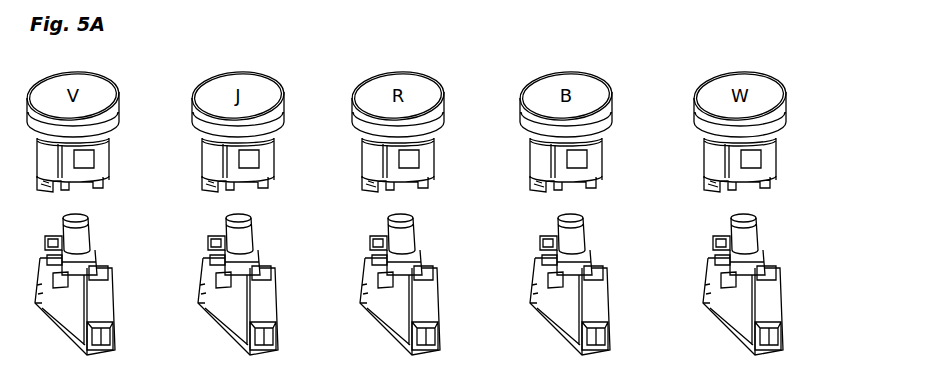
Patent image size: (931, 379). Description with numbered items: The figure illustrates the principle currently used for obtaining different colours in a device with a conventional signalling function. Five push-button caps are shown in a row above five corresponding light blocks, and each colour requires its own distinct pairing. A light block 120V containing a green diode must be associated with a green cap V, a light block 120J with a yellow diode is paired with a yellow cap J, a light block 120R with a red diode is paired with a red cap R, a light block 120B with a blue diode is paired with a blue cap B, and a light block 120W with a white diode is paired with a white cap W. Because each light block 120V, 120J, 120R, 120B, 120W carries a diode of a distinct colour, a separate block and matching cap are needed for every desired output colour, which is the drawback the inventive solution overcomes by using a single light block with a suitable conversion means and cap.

The light block for green 120V is at (23, 310).
The light block for yellow 120J is at (264, 284).
The light block for red 120R is at (430, 284).
The light block for blue 120B is at (601, 284).
The light block for white 120W is at (771, 284).